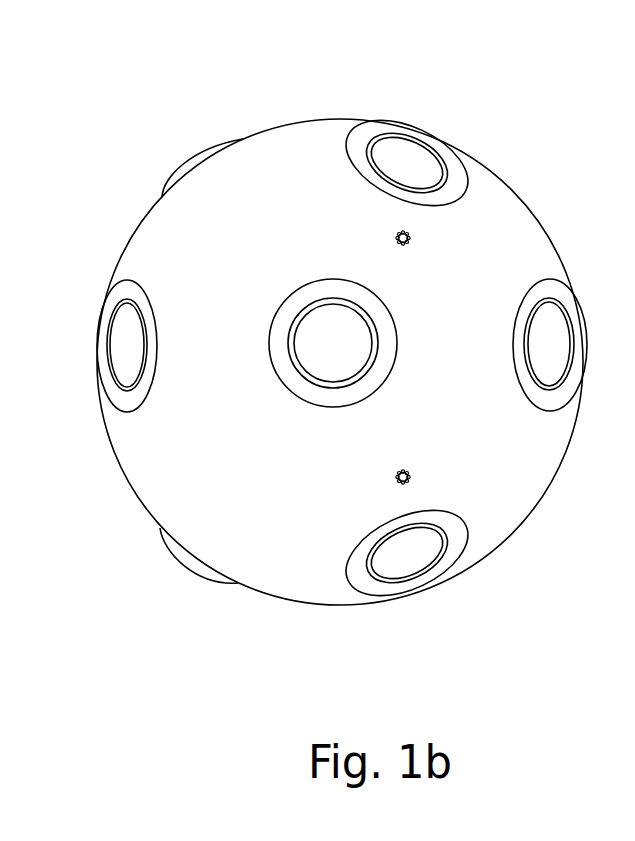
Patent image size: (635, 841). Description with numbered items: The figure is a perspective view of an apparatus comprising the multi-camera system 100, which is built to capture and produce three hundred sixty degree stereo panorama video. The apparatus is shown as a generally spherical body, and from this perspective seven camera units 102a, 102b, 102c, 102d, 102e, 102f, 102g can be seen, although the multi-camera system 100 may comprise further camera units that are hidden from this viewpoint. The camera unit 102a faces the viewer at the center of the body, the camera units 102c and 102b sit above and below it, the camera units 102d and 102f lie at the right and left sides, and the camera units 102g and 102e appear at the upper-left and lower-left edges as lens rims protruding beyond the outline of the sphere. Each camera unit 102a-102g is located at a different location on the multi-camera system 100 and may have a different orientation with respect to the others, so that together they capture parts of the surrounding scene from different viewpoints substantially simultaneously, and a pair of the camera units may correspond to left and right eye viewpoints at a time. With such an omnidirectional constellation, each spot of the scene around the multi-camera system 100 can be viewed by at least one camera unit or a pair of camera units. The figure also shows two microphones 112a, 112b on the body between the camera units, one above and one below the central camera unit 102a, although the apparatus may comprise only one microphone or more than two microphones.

The multi-camera system 100 is at (88, 100).
The camera unit 102a is at (287, 303).
The camera unit 102b is at (357, 540).
The camera unit 102c is at (363, 132).
The camera unit 102d is at (557, 282).
The camera unit 102e is at (175, 553).
The camera unit 102f is at (108, 310).
The camera unit 102g is at (193, 152).
The microphone 112a is at (410, 240).
The microphone 112b is at (410, 475).